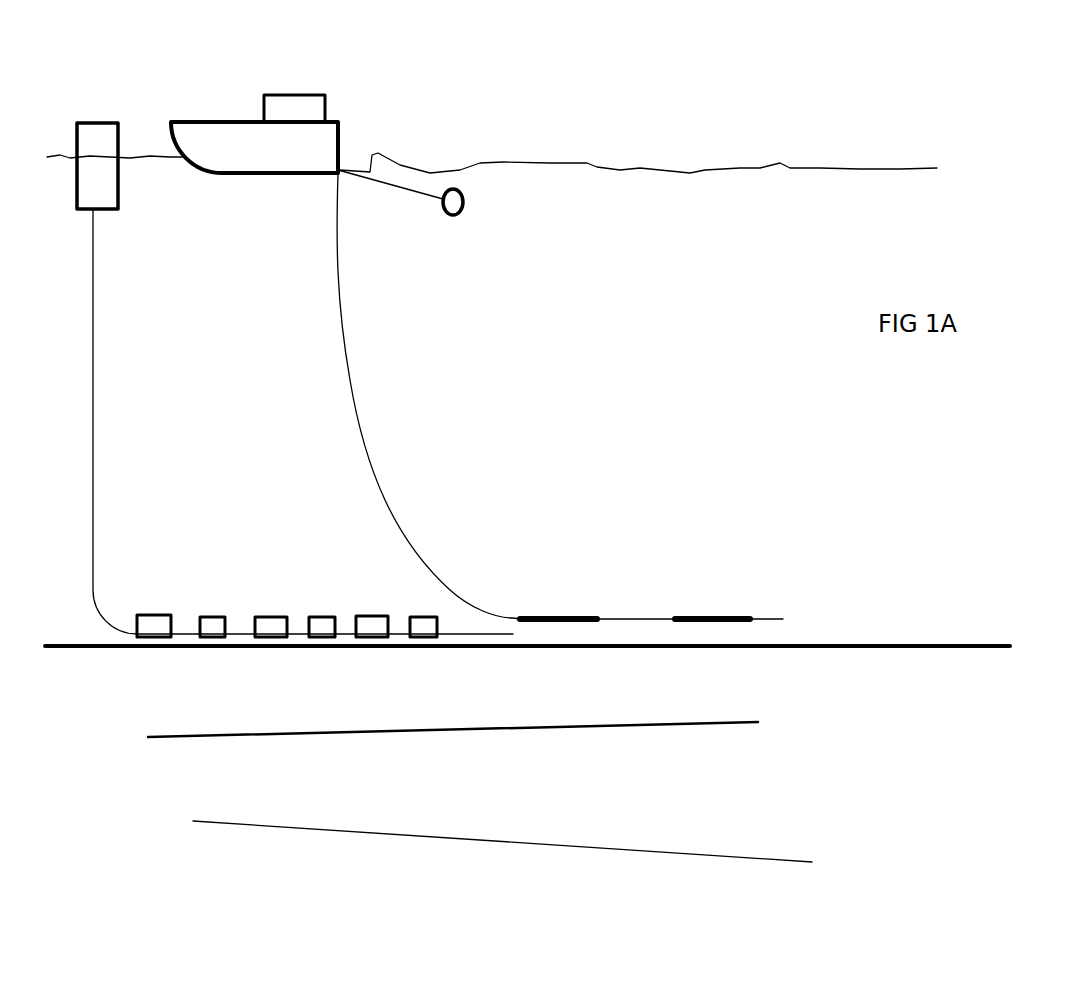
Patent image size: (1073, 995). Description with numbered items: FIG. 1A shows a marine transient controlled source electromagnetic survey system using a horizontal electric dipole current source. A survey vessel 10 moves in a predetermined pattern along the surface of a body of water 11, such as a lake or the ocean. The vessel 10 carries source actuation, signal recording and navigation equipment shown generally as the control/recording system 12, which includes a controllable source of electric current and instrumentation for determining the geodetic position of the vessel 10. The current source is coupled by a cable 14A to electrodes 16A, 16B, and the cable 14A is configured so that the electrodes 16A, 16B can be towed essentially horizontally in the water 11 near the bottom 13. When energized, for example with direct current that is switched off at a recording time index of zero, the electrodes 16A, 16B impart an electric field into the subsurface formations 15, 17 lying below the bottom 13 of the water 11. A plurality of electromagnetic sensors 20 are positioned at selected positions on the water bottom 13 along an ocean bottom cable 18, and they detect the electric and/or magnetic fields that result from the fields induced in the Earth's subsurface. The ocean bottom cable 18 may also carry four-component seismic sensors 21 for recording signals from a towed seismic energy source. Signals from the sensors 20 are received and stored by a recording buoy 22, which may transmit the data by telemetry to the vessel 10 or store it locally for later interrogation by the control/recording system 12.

The survey vessel 10 is at (212, 133).
The body of water 11 is at (590, 163).
The control/recording system 12 is at (303, 100).
The water bottom 13 is at (777, 643).
The cable 14A is at (350, 380).
The subsurface formation 15 is at (454, 214).
The electrode 16A is at (543, 615).
The electrode 16B is at (700, 615).
The subsurface formation 17 is at (612, 850).
The cable 18 is at (93, 403).
The electromagnetic sensor 20 is at (162, 615).
The seismic sensor 21 is at (225, 617).
The recording buoy 22 is at (95, 122).